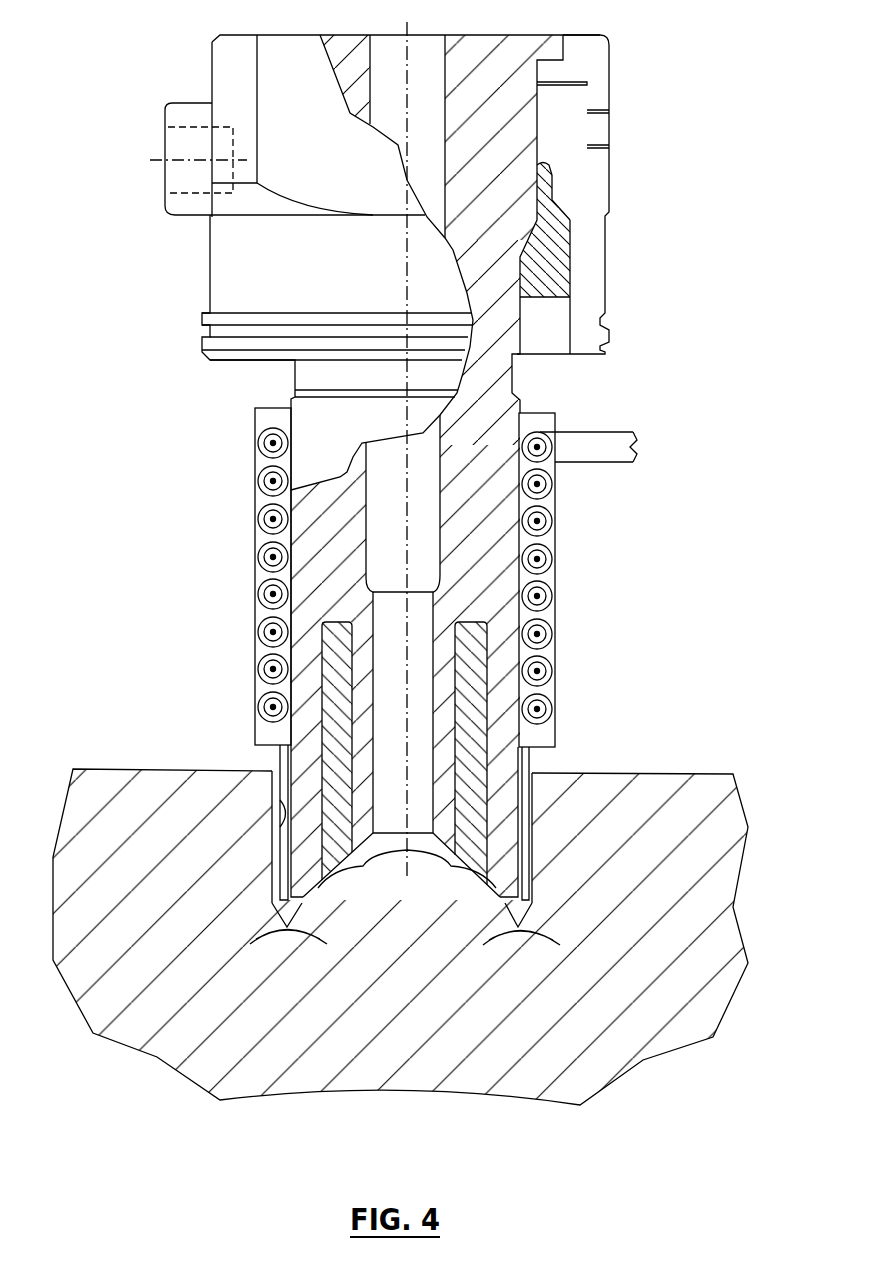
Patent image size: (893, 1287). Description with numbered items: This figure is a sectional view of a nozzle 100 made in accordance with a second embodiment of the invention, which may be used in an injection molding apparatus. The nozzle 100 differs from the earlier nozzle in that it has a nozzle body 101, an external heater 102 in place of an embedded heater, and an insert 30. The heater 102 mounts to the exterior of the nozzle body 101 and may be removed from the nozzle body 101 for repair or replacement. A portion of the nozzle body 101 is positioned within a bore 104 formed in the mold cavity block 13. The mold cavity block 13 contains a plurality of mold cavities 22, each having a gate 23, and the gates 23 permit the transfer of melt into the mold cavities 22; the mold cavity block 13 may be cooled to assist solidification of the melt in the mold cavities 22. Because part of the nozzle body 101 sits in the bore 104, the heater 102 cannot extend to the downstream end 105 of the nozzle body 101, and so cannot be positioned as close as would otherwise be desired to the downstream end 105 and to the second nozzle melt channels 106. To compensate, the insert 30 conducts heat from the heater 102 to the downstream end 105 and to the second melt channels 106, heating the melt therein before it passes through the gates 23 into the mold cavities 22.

The nozzle 100 is at (186, 582).
The nozzle body 101 is at (495, 408).
The external heater 102 is at (547, 593).
The bore 104 is at (273, 795).
The downstream end 105 is at (458, 905).
The second nozzle melt channels 106 is at (362, 852).
The mold cavity block 13 is at (718, 890).
The insert 30 is at (476, 753).
The gate 23 is at (276, 925).
The mold cavity 22 is at (268, 940).